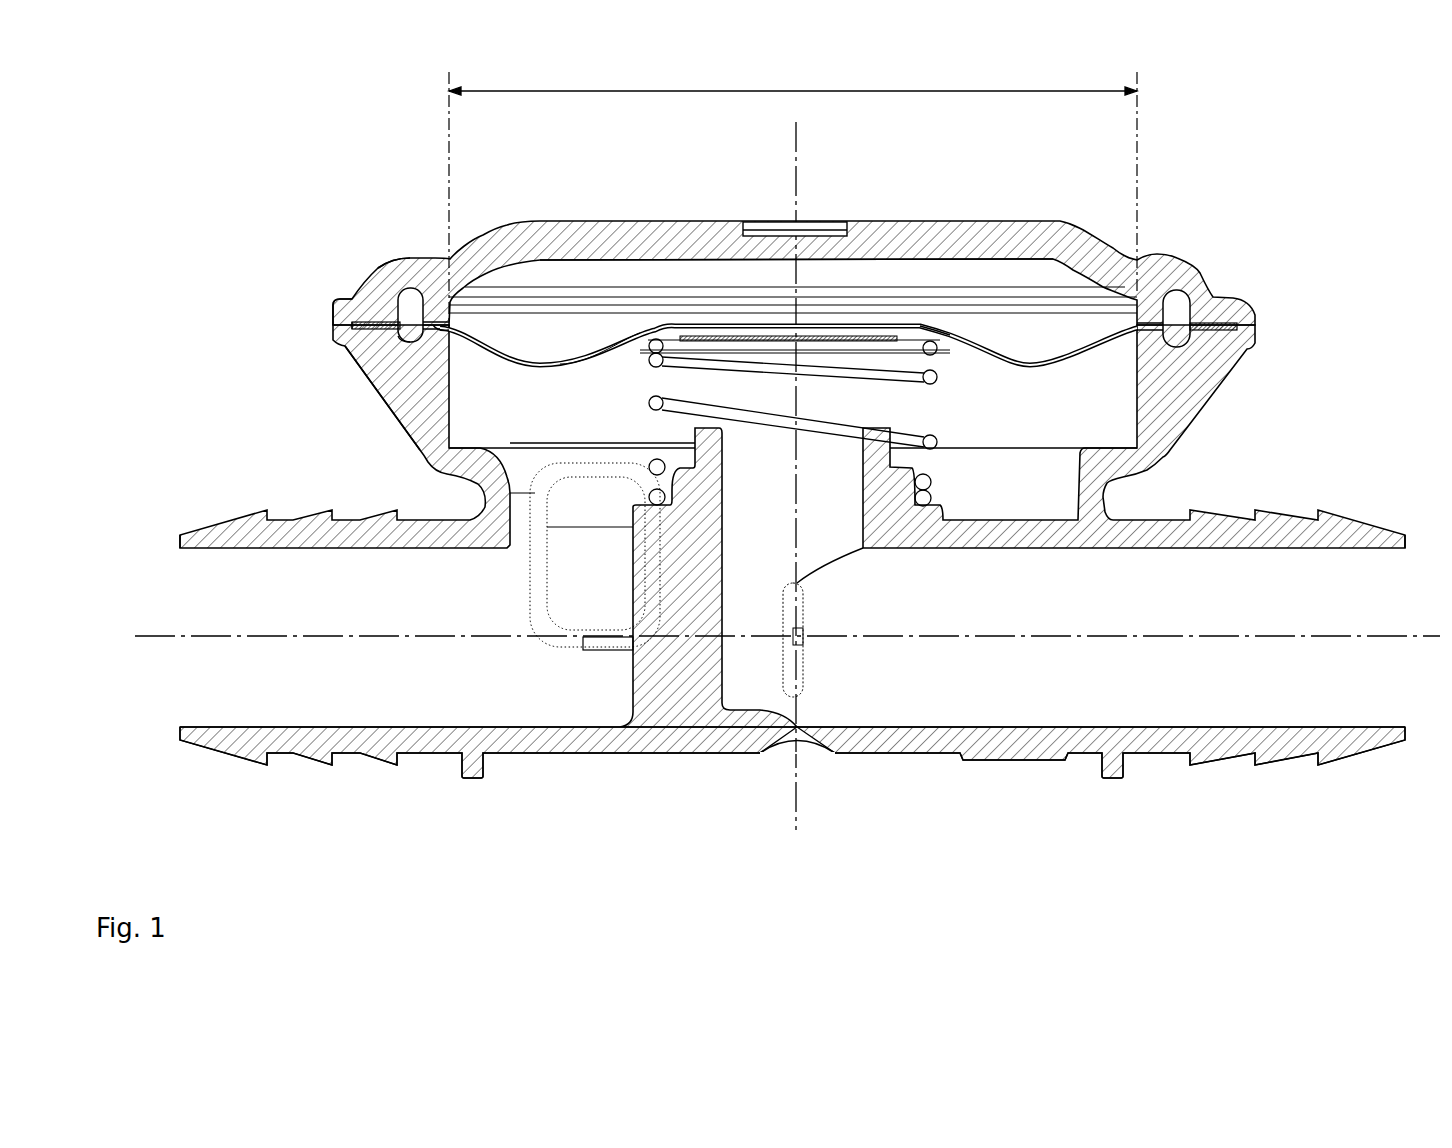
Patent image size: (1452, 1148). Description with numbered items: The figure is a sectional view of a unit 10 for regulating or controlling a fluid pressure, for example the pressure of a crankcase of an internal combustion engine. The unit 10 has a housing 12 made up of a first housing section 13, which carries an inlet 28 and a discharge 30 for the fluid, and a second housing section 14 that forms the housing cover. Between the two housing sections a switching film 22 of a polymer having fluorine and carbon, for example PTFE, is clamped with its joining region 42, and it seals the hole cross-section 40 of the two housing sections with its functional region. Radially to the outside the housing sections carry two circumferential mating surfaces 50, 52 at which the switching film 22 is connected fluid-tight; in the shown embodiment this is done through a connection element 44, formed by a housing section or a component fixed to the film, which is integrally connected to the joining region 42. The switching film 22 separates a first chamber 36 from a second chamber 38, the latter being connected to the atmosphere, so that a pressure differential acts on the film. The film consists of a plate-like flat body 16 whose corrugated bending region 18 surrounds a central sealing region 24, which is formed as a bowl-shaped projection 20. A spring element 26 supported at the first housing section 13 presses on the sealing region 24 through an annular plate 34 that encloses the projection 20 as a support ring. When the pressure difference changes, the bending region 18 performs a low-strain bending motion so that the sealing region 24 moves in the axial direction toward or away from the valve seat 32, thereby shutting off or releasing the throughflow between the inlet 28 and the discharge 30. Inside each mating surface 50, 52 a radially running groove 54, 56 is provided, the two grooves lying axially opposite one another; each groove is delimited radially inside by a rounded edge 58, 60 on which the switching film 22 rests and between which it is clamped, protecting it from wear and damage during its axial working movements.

The unit 10 is at (1260, 207).
The housing 12 is at (792, 335).
The first housing section 13 is at (1197, 390).
The second housing section 14 is at (1010, 222).
The plate-like flat body 16 is at (578, 300).
The bending region 18 is at (508, 350).
The bowl-shaped projection 20 is at (700, 335).
The switching film 22 is at (586, 335).
The sealing region 24 is at (833, 337).
The spring element 26 is at (937, 380).
The inlet 28 is at (227, 537).
The discharge 30 is at (1337, 530).
The valve seat 32 is at (698, 426).
The plate 34 is at (945, 335).
The first chamber 36 is at (506, 433).
The second chamber 38 is at (551, 356).
The hole cross-section 40 is at (793, 194).
The joining region 42 is at (360, 303).
The connection element 44 is at (355, 324).
The mating surface 50 is at (398, 343).
The mating surface 52 is at (368, 323).
The groove 54 is at (410, 350).
The groove 56 is at (393, 259).
The edge 58 is at (438, 332).
The edge 60 is at (413, 296).